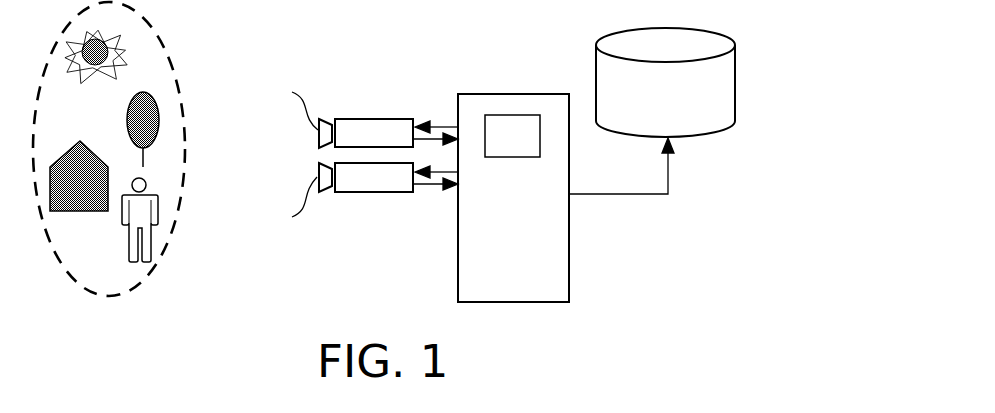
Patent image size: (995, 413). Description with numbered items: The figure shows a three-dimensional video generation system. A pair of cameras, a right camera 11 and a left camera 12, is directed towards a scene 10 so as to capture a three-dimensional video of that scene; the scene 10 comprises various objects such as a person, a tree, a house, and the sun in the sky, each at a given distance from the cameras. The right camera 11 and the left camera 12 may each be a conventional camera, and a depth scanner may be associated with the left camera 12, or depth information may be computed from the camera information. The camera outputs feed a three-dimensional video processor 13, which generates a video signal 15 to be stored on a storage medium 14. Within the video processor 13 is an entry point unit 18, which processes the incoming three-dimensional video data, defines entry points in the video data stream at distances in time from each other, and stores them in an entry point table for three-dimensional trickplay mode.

The scene 10 is at (153, 265).
The right camera 11 is at (372, 118).
The left camera 12 is at (373, 193).
The 3D video processor 13 is at (510, 93).
The storage medium 14 is at (680, 94).
The video signal 15 is at (634, 196).
The entry point unit 18 is at (526, 147).